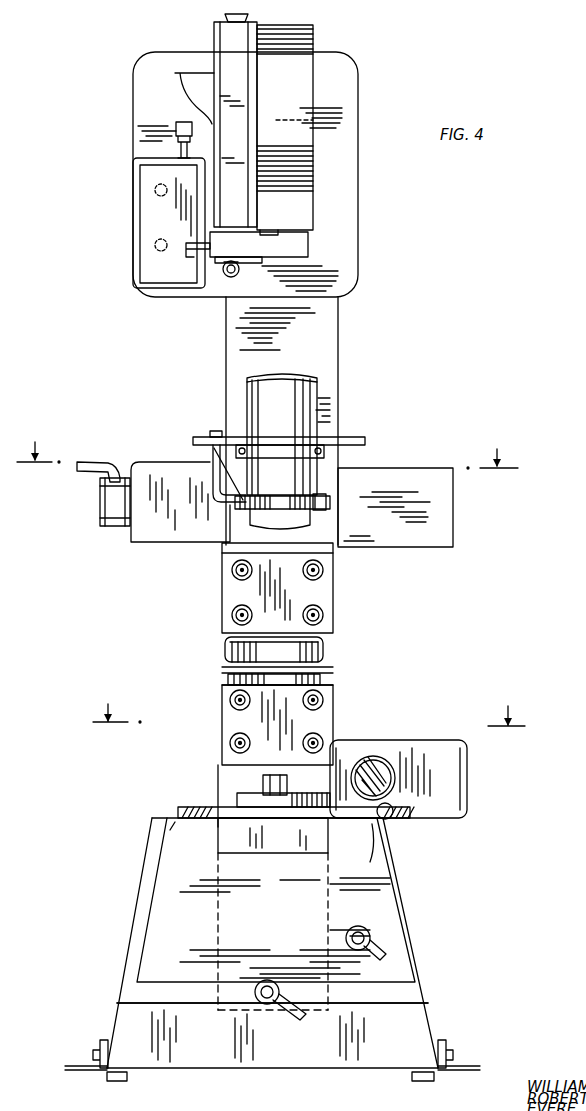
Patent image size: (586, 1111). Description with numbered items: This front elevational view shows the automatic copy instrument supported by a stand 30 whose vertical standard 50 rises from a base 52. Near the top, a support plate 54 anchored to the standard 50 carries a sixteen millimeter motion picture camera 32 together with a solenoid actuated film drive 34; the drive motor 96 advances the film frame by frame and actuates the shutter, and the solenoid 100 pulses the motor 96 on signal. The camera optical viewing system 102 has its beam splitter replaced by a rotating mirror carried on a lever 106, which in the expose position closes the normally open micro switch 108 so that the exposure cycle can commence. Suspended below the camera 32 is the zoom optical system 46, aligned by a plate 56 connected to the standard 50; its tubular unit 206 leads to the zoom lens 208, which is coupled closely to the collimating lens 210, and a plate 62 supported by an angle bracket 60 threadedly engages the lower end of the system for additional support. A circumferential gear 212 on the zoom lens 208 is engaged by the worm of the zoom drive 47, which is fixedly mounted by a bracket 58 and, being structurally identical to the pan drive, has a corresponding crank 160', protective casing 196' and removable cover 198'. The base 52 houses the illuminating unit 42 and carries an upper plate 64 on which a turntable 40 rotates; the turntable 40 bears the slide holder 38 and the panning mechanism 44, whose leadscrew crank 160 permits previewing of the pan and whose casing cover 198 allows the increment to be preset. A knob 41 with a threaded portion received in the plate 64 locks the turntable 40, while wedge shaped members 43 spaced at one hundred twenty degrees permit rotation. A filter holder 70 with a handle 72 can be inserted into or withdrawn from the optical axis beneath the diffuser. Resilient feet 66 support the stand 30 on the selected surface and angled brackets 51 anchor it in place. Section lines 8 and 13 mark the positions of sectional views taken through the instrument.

The stand 30 is at (345, 335).
The camera 32 is at (300, 20).
The solenoid actuated film drive 34 is at (168, 74).
The slide holder 38 is at (303, 797).
The turntable 40 is at (206, 805).
The knob 41 is at (268, 788).
The illuminating unit 42 is at (392, 870).
The wedge shaped members 43 is at (182, 824).
The panning mechanism 44 is at (434, 745).
The zoom optical system 46 is at (322, 418).
The zoom drive 47 is at (144, 546).
The standard 50 is at (234, 340).
The angled brackets 51 is at (100, 1034).
The base 52 is at (127, 1012).
The support plate 54 is at (358, 196).
The plate 56 is at (266, 448).
The bracket 58 is at (335, 556).
The angle bracket 60 is at (224, 678).
The plate 62 is at (330, 678).
The upper plate 64 is at (172, 810).
The resilient feet 66 is at (116, 1082).
The filter holder 70 is at (332, 840).
The handle 72 is at (220, 852).
The drive motor 96 is at (203, 80).
The solenoid 100 is at (150, 270).
The camera optical viewing system 102 is at (240, 108).
The lever 106 is at (190, 250).
The micro switch 108 is at (228, 276).
The crank 160 is at (432, 787).
The crank 160' is at (85, 494).
The protective casing 196' is at (395, 521).
The removable cover 198 is at (435, 779).
The removable cover 198' is at (179, 492).
The tubular unit 206 is at (250, 392).
The zoom lens 208 is at (310, 480).
The collimating lens 210 is at (325, 648).
The gear 212 is at (240, 508).
The section line 8 is at (309, 704).
The section line 13 is at (267, 446).